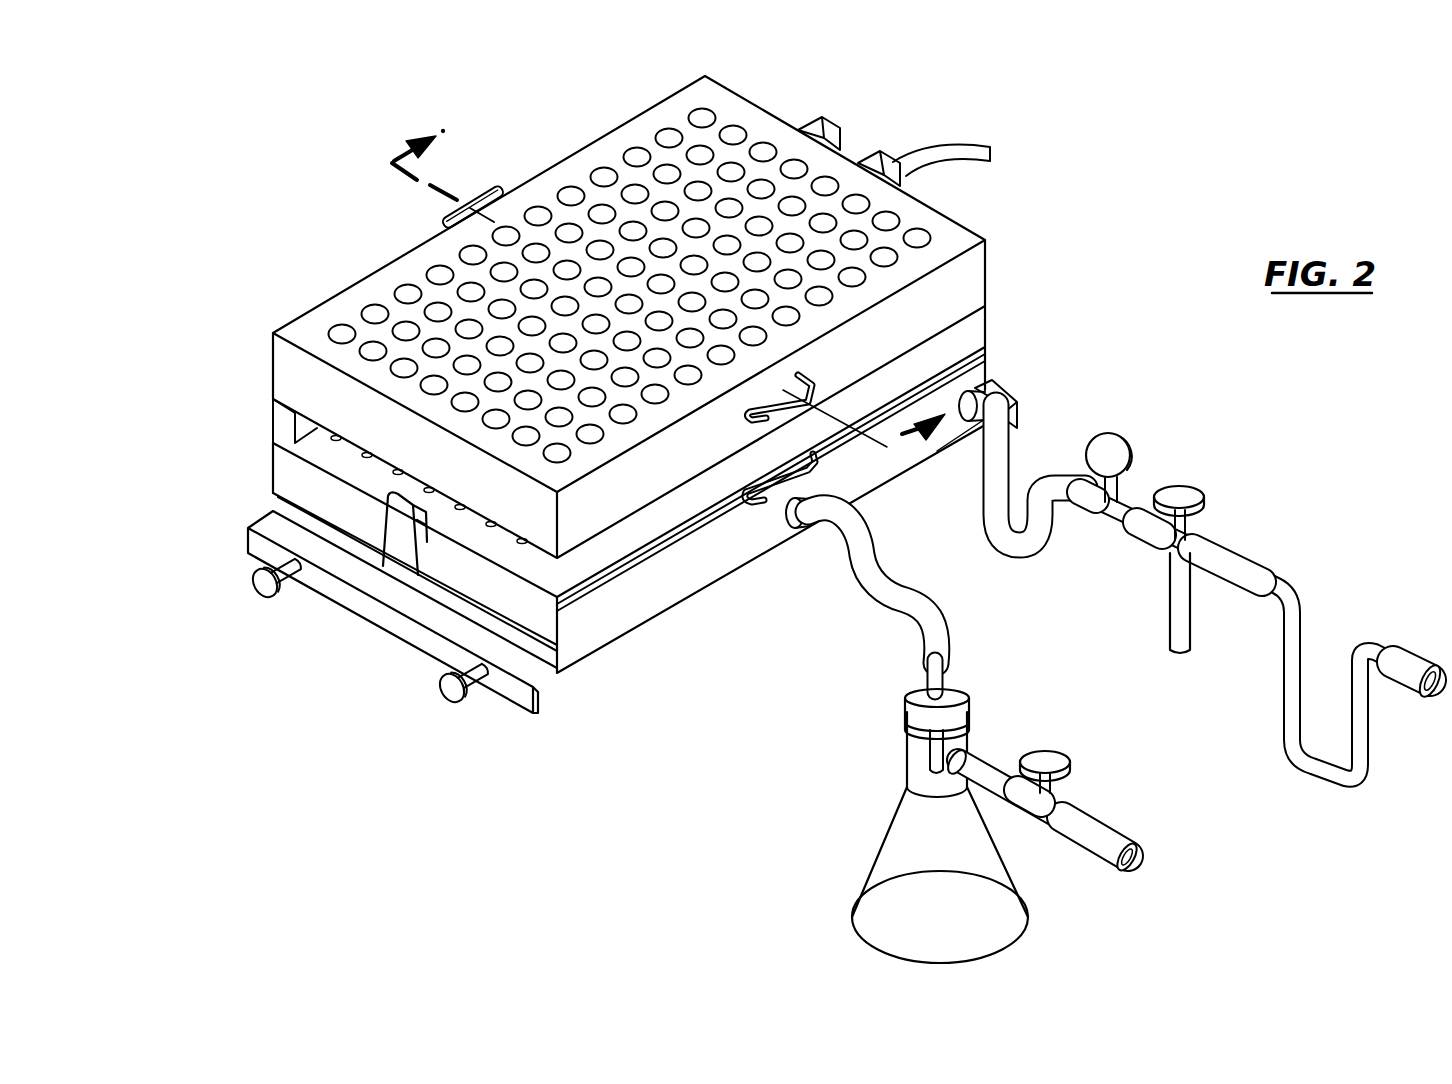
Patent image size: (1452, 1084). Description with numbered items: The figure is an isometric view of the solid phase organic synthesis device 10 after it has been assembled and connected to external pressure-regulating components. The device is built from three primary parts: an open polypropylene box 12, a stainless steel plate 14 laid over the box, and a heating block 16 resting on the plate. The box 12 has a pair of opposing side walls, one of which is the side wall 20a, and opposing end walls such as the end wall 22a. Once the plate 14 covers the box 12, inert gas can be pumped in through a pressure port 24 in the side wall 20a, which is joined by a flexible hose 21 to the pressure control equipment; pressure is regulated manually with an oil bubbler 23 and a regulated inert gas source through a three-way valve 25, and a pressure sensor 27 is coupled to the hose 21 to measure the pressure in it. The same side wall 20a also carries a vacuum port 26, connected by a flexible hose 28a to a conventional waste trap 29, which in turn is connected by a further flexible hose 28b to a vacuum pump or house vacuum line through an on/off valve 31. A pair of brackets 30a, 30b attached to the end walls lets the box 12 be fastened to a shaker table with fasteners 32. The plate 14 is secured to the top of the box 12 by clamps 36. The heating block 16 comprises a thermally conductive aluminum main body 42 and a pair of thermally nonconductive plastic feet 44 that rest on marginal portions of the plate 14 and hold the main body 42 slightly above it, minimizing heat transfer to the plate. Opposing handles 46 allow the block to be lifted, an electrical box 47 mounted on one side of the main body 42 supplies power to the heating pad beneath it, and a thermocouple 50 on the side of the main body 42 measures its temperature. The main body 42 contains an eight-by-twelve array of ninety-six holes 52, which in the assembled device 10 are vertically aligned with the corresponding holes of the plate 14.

The solid phase organic synthesis device 10 is at (244, 333).
The open polypropylene box 12 is at (257, 489).
The stainless steel plate 14 is at (318, 457).
The heating block 16 is at (302, 303).
The side wall 20a is at (705, 565).
The flexible hose 21 is at (1006, 495).
The end wall 22a is at (465, 583).
The oil bubbler 23 is at (1310, 755).
The pressure port 24 is at (990, 396).
The three-way valve 25 is at (1182, 493).
The vacuum port 26 is at (853, 478).
The pressure sensor 27 is at (1120, 447).
The flexible hose 28a is at (898, 605).
The flexible hose 28b is at (995, 770).
The waste trap 29 is at (890, 849).
The bracket 30a is at (327, 585).
The bracket 30b is at (1016, 401).
The on/off valve 31 is at (1060, 760).
The fasteners 32 is at (452, 703).
The clamps 36 is at (405, 550).
The main body 42 is at (600, 150).
The feet 44 is at (280, 414).
The handles 46 is at (489, 188).
The electrical box 47 is at (882, 160).
The thermocouple 50 is at (830, 124).
The holes 52 is at (708, 112).